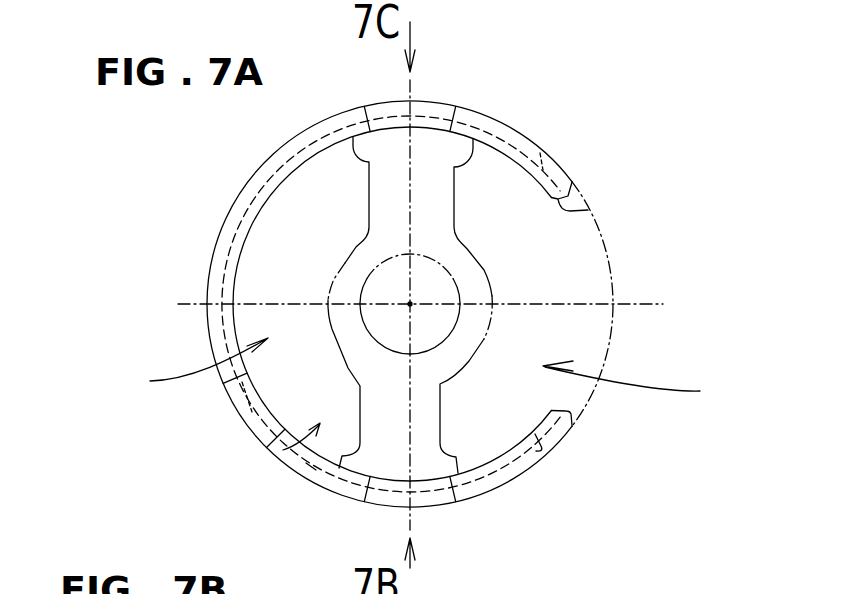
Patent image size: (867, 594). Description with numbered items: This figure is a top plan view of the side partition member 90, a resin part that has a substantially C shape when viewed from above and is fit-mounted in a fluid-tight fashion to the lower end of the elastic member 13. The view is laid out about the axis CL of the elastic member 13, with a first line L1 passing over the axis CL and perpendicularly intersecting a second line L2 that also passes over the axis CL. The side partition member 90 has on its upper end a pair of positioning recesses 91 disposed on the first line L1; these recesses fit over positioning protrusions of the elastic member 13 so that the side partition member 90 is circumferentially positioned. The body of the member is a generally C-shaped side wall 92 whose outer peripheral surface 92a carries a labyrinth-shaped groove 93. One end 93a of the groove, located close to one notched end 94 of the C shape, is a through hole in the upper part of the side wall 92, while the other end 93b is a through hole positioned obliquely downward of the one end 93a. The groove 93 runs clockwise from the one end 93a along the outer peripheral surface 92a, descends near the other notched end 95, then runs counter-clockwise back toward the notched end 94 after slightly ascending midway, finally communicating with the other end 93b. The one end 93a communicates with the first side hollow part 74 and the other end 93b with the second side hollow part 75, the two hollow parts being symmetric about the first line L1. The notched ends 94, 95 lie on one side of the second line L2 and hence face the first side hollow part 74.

The side partition member 90 is at (429, 294).
The positioning recess 91 is at (450, 111).
The side wall 92 is at (341, 304).
The outer peripheral surface 92a is at (212, 263).
The labyrinth-shaped groove 93 is at (223, 385).
The one end of the labyrinth-shaped groove 93a is at (527, 448).
The other end of the labyrinth-shaped groove 93b is at (312, 466).
The one notched end 94 is at (562, 404).
The other notched end 95 is at (588, 211).
The elastic member 13 is at (638, 337).
The first side hollow part 74 is at (700, 391).
The second side hollow part 75 is at (150, 381).
The first line L1 is at (413, 198).
The second line L2 is at (646, 306).
The axis of the elastic member CL is at (411, 303).